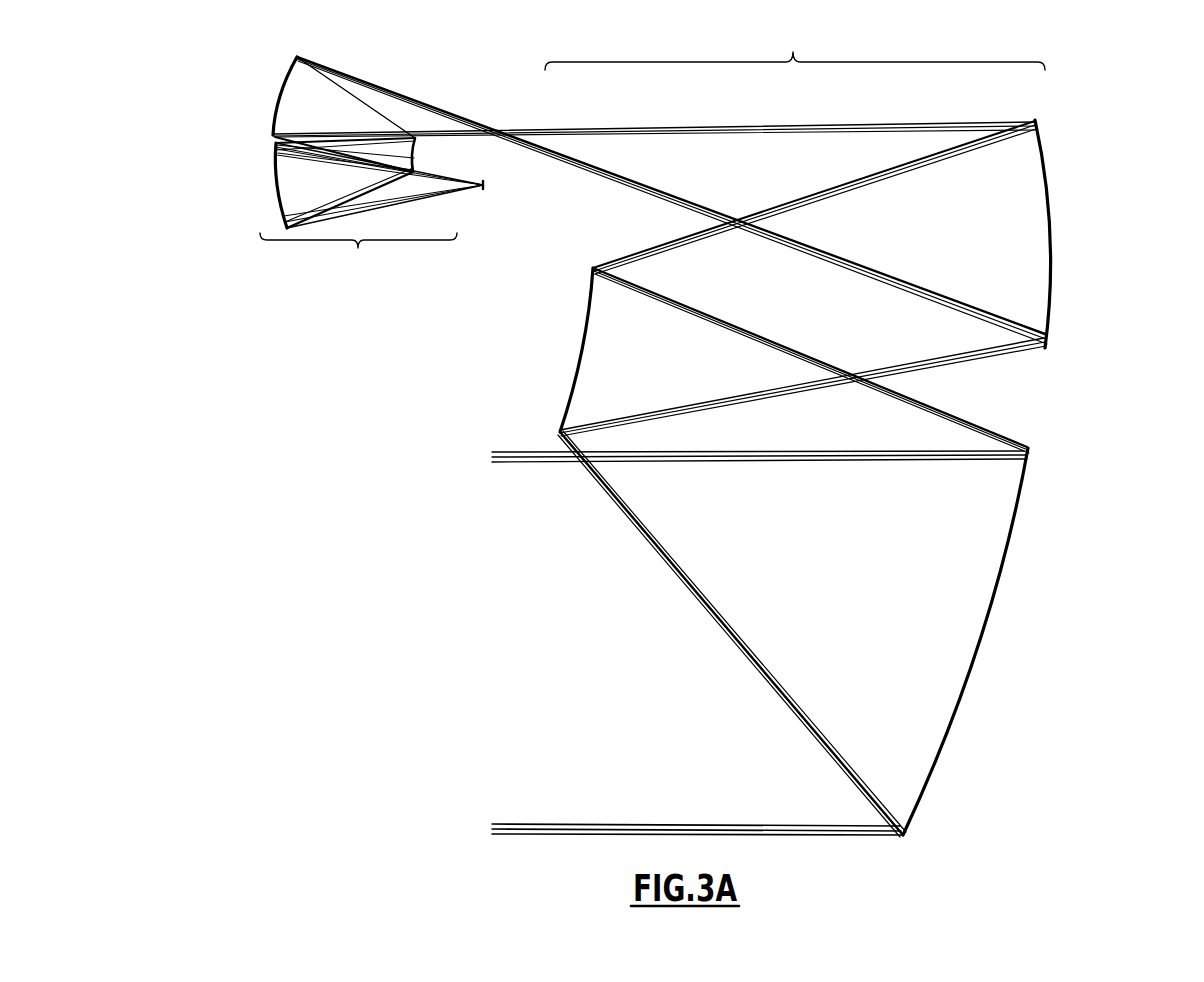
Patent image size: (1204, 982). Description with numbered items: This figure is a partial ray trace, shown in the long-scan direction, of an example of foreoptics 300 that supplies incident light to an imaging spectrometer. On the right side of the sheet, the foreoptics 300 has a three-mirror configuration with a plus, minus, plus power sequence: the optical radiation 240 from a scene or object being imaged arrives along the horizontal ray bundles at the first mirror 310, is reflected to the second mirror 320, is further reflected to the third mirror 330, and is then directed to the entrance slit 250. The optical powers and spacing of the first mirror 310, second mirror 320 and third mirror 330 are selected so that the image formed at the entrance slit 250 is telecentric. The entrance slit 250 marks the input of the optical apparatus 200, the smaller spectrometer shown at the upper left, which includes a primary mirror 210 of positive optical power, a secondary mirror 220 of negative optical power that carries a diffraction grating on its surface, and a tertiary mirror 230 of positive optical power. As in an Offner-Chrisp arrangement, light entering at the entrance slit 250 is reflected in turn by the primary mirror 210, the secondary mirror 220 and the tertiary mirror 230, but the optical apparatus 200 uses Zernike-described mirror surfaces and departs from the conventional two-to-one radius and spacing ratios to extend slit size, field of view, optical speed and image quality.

The optical apparatus 200 is at (358, 261).
The primary mirror 210 is at (262, 88).
The secondary mirror 220 is at (426, 140).
The tertiary mirror 230 is at (258, 183).
The optical radiation 240 is at (627, 804).
The entrance slit 250 is at (493, 108).
The foreoptics 300 is at (795, 47).
The first mirror 310 is at (1008, 644).
The second mirror 320 is at (563, 350).
The third mirror 330 is at (1065, 204).